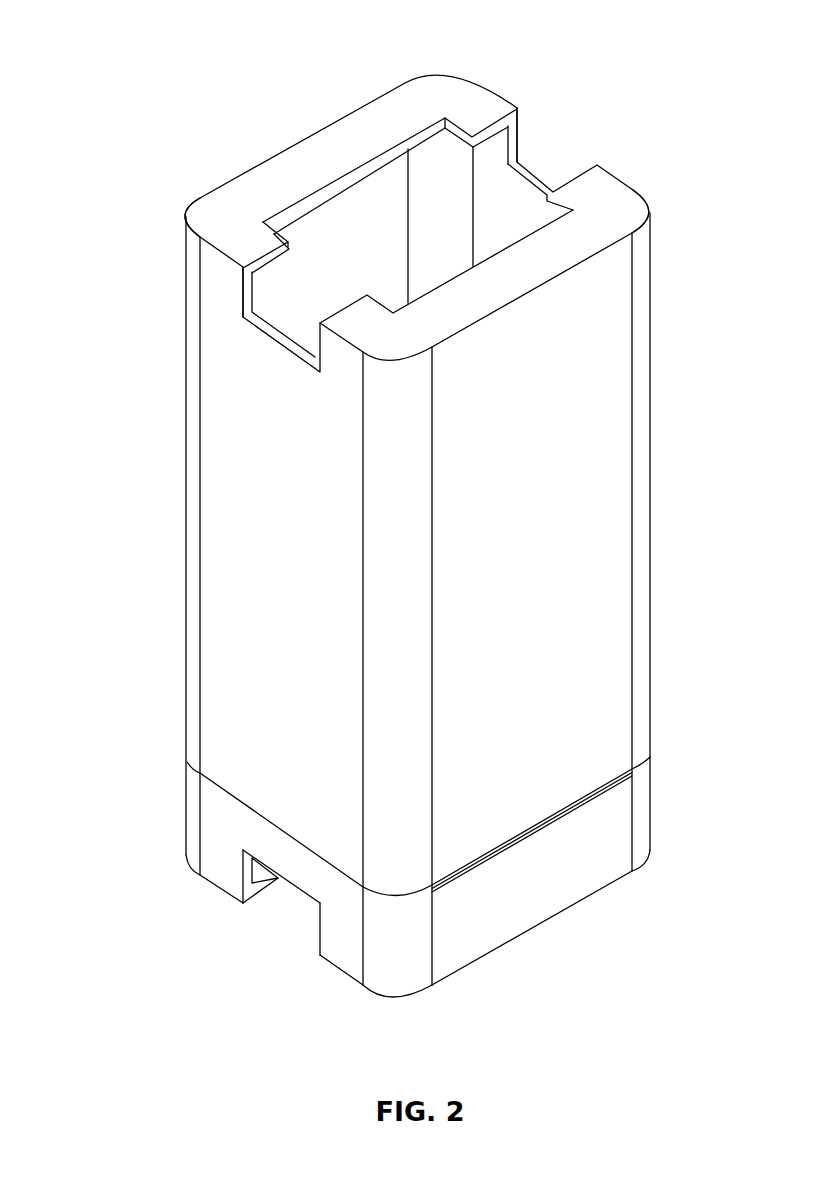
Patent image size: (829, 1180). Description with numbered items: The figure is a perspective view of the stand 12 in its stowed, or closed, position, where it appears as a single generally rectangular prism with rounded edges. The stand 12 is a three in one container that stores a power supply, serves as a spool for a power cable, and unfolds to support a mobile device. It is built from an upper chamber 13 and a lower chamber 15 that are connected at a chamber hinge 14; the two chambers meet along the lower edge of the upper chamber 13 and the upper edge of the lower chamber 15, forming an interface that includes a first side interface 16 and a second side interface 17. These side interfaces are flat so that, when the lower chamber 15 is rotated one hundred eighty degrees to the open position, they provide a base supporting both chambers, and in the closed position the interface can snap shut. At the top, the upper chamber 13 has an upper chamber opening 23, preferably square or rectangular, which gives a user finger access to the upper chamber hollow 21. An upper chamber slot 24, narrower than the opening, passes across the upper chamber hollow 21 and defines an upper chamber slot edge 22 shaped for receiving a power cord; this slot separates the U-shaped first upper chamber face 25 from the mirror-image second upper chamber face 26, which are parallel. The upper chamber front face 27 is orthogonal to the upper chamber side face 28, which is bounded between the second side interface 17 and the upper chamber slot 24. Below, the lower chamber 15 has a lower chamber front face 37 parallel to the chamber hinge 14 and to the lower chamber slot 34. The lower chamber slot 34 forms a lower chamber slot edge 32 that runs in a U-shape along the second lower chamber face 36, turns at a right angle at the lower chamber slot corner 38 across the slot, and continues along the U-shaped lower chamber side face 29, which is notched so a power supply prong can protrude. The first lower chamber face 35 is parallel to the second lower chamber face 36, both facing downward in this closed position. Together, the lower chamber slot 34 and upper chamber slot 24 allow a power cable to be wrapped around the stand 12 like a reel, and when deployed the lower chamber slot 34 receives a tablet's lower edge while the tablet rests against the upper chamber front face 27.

The stand 12 is at (700, 56).
The upper chamber 13 is at (618, 387).
The chamber hinge 14 is at (610, 780).
The lower chamber 15 is at (555, 885).
The first side interface 16 is at (640, 767).
The second side interface 17 is at (220, 783).
The upper chamber hollow 21 is at (267, 292).
The upper chamber slot edge 22 is at (530, 183).
The upper chamber opening 23 is at (330, 213).
The upper chamber slot 24 is at (525, 138).
The first upper chamber face 25 is at (202, 217).
The second upper chamber face 26 is at (631, 206).
The upper chamber front face 27 is at (618, 582).
The upper chamber side face 28 is at (218, 505).
The lower chamber side face 29 is at (243, 882).
The lower chamber slot edge 32 is at (318, 937).
The lower chamber slot 34 is at (290, 898).
The first lower chamber face 35 is at (214, 880).
The second lower chamber face 36 is at (352, 985).
The lower chamber front face 37 is at (610, 873).
The lower chamber slot corner 38 is at (322, 893).